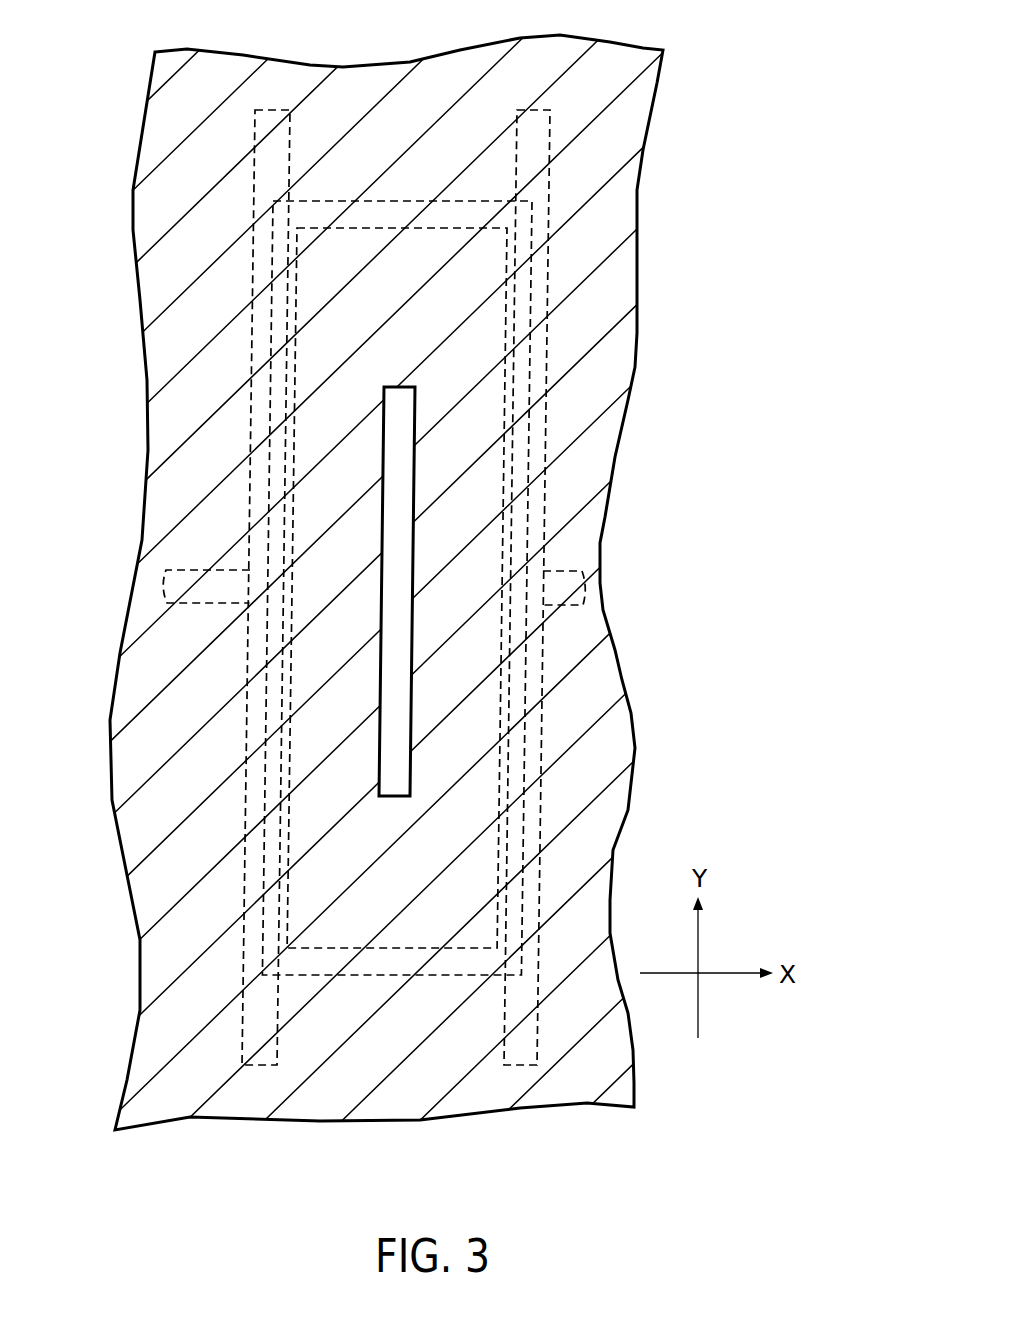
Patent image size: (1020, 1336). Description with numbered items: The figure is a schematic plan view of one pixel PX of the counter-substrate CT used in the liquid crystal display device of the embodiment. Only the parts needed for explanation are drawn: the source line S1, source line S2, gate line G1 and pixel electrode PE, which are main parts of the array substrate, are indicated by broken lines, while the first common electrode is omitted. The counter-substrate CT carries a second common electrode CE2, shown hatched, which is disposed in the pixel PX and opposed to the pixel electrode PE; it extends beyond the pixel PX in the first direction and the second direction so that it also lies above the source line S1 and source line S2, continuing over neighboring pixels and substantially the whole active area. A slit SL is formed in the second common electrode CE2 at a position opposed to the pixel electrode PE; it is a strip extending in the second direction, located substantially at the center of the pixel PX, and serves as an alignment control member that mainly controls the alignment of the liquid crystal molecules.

The second common electrode CE2 is at (365, 1120).
The counter-substrate CT is at (510, 608).
The source line S1 is at (272, 110).
The source line S2 is at (530, 110).
The pixel PX is at (540, 195).
The pixel electrode PE is at (514, 320).
The gate line G1 is at (160, 592).
The slit SL is at (415, 703).